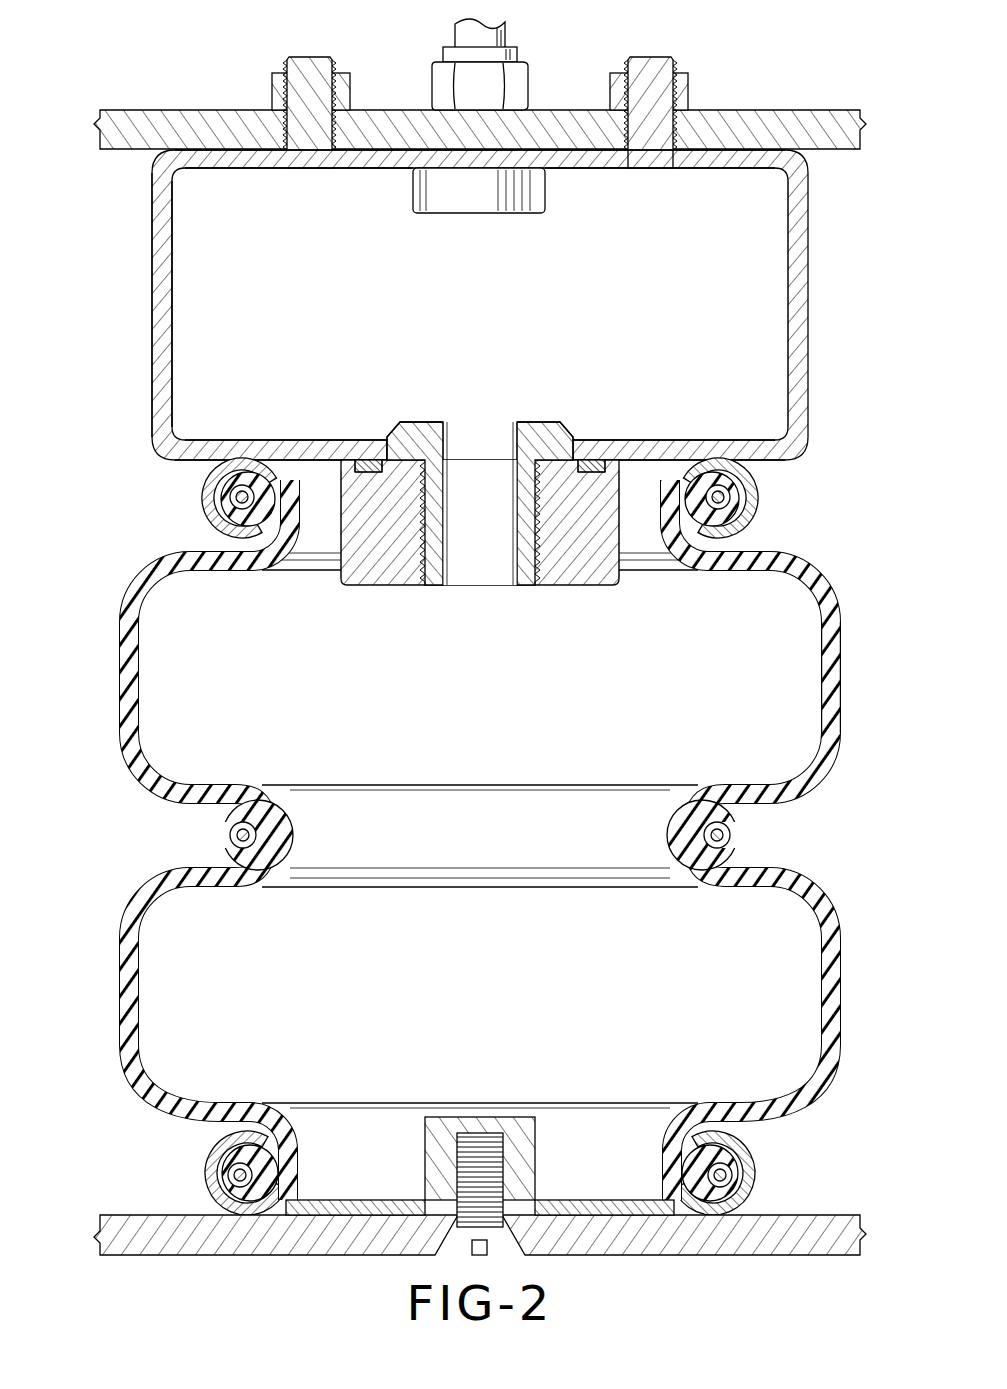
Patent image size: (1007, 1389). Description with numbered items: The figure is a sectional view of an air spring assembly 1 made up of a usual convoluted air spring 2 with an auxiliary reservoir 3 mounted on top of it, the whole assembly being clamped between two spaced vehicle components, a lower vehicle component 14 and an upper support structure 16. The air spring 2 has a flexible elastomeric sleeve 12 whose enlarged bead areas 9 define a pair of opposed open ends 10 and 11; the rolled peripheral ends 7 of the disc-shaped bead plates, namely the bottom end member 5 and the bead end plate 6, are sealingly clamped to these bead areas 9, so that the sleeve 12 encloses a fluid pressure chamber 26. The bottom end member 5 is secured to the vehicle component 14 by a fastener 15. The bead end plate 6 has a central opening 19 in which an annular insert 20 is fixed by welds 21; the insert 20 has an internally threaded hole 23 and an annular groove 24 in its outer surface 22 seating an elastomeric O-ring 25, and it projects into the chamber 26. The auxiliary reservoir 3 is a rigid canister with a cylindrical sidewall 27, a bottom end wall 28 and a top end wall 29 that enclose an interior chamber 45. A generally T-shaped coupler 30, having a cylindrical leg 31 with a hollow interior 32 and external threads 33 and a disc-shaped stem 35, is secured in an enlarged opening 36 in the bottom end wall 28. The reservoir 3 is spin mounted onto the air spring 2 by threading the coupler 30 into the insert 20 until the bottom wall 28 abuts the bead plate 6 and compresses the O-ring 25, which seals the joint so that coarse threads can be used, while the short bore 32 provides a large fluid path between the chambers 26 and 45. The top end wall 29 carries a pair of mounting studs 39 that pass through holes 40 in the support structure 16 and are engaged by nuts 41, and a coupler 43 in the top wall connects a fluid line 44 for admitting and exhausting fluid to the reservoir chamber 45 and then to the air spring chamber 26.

The air spring assembly 1 is at (776, 826).
The convoluted air spring 2 is at (152, 570).
The auxiliary reservoir 3 is at (810, 218).
The bottom end member 5 is at (204, 1162).
The bead end plate 6 is at (756, 523).
The rolled peripheral ends 7 is at (206, 496).
The enlarged bead areas 9 is at (736, 492).
The open end 10 is at (298, 524).
The open end 11 is at (300, 1160).
The flexible elastomeric sleeve 12 is at (826, 590).
The vehicle component 14 is at (775, 1252).
The fastener 15 is at (482, 1148).
The upper support structure 16 is at (802, 118).
The central opening 19 is at (606, 470).
The annular insert 20 is at (598, 587).
The welds 21 is at (332, 468).
The outer surface 22 is at (366, 460).
The internally threaded hole 23 is at (420, 560).
The annular groove 24 is at (370, 478).
The O-ring 25 is at (596, 465).
The fluid pressure chamber 26 is at (768, 668).
The cylindrical sidewall 27 is at (158, 265).
The bottom end wall 28 is at (252, 441).
The top end wall 29 is at (260, 165).
The coupler 30 is at (483, 422).
The cylindrical leg 31 is at (527, 572).
The hollow interior 32 is at (484, 572).
The external threads 33 is at (545, 565).
The disc-shaped stem 35 is at (440, 428).
The enlarged opening 36 is at (415, 428).
The mounting studs 39 is at (302, 62).
The holes 40 is at (655, 133).
The nuts 41 is at (276, 82).
The coupler 43 is at (440, 82).
The fluid line 44 is at (470, 42).
The auxiliary reservoir interior chamber 45 is at (768, 291).